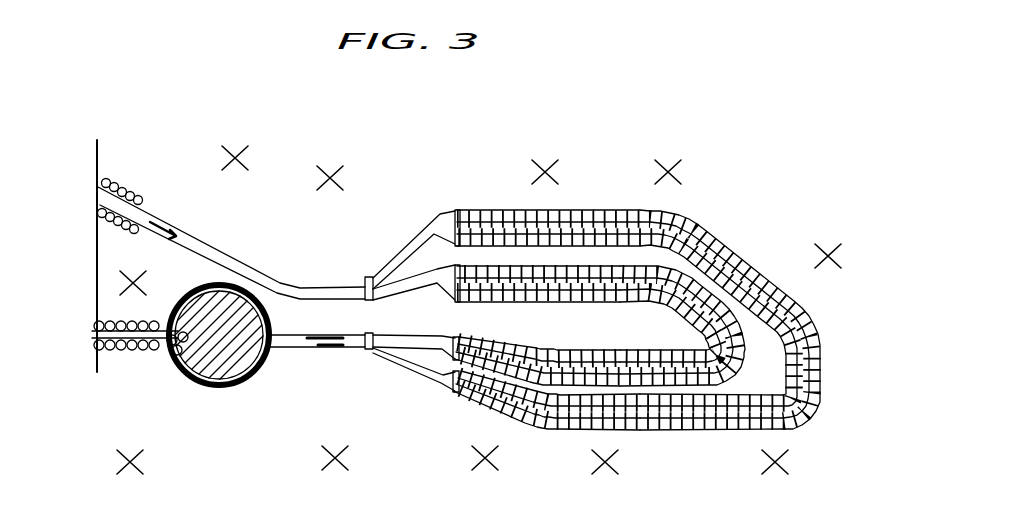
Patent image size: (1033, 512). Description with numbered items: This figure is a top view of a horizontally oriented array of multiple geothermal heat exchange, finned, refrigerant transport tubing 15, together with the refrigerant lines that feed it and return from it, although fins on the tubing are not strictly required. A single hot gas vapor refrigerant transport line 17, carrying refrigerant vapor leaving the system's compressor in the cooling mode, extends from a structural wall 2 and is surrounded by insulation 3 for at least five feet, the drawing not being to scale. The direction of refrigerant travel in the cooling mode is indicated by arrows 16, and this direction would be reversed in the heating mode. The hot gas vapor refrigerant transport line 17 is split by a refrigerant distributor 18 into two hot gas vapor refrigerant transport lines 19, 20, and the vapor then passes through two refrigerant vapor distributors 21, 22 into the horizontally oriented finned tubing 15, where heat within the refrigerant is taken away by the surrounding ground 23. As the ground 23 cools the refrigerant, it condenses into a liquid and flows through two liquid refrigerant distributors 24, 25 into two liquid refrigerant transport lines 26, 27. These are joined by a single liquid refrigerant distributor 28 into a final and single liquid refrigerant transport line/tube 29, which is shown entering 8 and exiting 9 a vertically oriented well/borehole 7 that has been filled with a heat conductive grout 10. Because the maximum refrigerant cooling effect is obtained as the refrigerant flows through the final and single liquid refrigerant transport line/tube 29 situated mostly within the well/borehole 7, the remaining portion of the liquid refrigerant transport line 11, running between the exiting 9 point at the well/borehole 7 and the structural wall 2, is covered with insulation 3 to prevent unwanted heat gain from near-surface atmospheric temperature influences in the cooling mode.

The structural wall 2 is at (96, 267).
The insulation 3 is at (117, 180).
The well/borehole 7 is at (195, 287).
The entering 8 is at (247, 338).
The exiting 9 is at (177, 352).
The heat conductive grout 10 is at (217, 350).
The liquid refrigerant transport line 11 is at (145, 338).
The array of multiple geothermal heat exchange finned refrigerant transport tubing 15 is at (733, 250).
The arrows 16 is at (160, 230).
The hot gas vapor refrigerant transport line 17 is at (235, 262).
The refrigerant distributor 18 is at (363, 287).
The hot gas vapor refrigerant transport line 19 is at (393, 262).
The hot gas vapor refrigerant transport line 20 is at (417, 290).
The refrigerant vapor distributor 21 is at (447, 220).
The refrigerant vapor distributor 22 is at (445, 280).
The ground 23 is at (597, 457).
The liquid refrigerant distributor 24 is at (452, 338).
The liquid refrigerant distributor 25 is at (445, 382).
The liquid refrigerant transport line 26 is at (413, 336).
The liquid refrigerant transport line 27 is at (408, 368).
The single liquid refrigerant distributor 28 is at (363, 348).
The final and single liquid refrigerant transport line/tube 29 is at (285, 338).